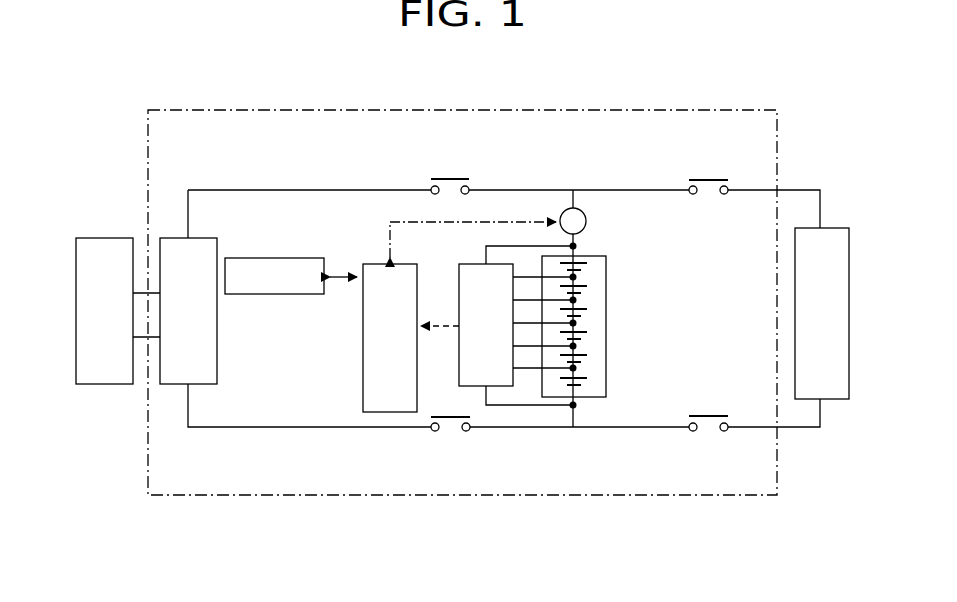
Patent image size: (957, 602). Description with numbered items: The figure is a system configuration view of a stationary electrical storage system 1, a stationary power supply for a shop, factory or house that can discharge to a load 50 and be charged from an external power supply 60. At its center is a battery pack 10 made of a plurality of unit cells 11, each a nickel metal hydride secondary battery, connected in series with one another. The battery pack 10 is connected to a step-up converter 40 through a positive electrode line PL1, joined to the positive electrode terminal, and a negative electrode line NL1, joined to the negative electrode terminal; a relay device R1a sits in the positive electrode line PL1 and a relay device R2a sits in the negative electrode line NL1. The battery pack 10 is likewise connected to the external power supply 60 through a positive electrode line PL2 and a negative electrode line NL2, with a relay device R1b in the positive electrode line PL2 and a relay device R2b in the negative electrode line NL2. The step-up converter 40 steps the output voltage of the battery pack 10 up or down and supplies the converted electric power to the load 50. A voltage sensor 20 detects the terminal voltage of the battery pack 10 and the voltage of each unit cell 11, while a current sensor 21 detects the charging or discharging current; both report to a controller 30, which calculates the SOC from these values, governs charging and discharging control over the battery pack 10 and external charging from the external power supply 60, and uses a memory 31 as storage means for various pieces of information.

The stationary electrical storage system 1 is at (782, 146).
The battery pack 10 is at (598, 250).
The unit cell 11 is at (586, 268).
The voltage sensor 20 is at (477, 263).
The current sensor 21 is at (587, 221).
The controller 30 is at (363, 322).
The memory 31 is at (283, 258).
The step-up converter 40 is at (217, 312).
The load 50 is at (76, 312).
The external power supply 60 is at (849, 302).
The relay device R1a is at (450, 175).
The relay device R1b is at (706, 174).
The relay device R2a is at (449, 437).
The relay device R2b is at (706, 436).
The positive electrode line PL1 is at (508, 188).
The positive electrode line PL2 is at (611, 188).
The negative electrode line NL1 is at (505, 437).
The negative electrode line NL2 is at (603, 437).